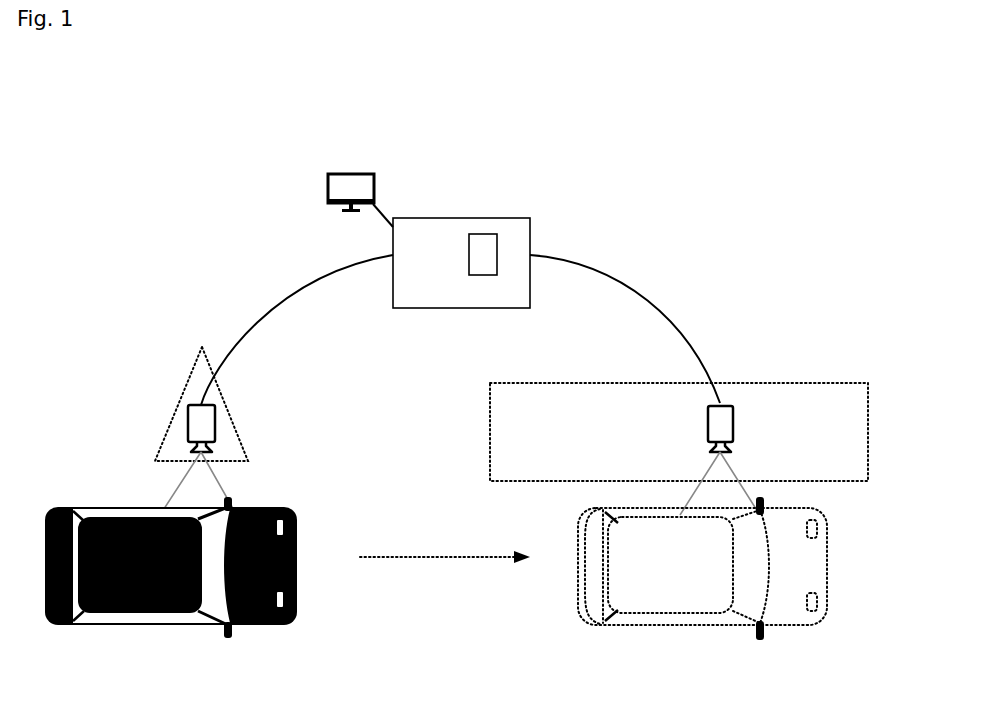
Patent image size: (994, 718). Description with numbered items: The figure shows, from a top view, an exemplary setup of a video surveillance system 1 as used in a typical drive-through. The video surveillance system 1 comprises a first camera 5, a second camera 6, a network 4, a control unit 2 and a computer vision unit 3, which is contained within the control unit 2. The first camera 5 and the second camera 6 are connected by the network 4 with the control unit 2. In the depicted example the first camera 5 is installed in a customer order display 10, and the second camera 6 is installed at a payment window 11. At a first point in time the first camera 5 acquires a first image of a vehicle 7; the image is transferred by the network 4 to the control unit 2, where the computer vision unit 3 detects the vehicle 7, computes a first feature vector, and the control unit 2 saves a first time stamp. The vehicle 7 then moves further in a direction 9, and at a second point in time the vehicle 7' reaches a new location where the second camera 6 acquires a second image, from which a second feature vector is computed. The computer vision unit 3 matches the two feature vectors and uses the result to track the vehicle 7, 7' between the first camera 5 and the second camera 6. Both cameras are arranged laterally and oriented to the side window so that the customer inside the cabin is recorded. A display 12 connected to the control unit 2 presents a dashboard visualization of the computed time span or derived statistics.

The video surveillance system 1 is at (693, 250).
The control unit 2 is at (530, 232).
The computer vision unit 3 is at (478, 230).
The network 4 is at (677, 322).
The first camera 5 is at (188, 427).
The second camera 6 is at (727, 403).
The vehicle 7 is at (181, 587).
The vehicle 7' is at (722, 593).
The direction 9 is at (442, 562).
The customer order display 10 is at (212, 370).
The payment window 11 is at (847, 382).
The display 12 is at (327, 192).